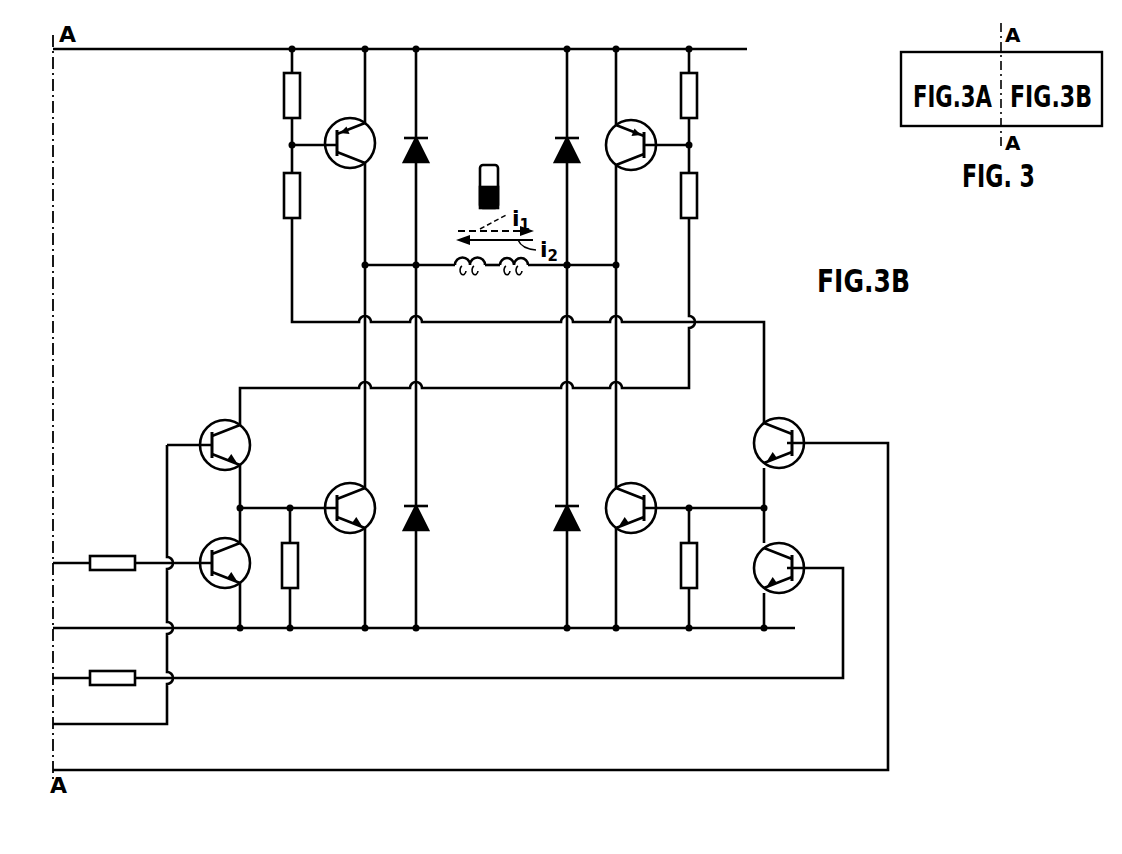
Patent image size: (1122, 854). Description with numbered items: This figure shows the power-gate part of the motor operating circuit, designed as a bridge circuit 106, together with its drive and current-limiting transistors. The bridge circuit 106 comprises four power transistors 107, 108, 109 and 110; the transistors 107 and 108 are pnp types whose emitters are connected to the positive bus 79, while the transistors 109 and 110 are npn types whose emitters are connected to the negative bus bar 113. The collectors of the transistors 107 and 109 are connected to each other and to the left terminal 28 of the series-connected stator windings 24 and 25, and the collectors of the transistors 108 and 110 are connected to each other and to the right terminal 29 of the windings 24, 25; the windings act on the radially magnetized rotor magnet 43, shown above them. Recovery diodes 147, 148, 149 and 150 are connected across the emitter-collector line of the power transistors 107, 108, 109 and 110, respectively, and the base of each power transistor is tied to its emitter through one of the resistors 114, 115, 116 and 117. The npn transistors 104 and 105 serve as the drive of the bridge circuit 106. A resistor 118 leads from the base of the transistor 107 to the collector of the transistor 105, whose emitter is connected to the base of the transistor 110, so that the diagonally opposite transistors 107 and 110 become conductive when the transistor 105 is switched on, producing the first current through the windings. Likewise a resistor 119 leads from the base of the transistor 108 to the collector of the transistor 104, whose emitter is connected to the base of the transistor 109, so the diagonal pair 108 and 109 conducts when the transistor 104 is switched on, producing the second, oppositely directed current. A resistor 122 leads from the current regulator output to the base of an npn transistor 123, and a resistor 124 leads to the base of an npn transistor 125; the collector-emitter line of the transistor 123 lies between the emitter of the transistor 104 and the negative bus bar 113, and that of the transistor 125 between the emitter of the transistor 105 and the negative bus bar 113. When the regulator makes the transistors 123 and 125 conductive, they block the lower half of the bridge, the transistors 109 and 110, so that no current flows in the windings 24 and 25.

The positive bus 79 is at (237, 49).
The bridge circuit 106 is at (468, 76).
The resistor 114 is at (284, 95).
The resistor 118 is at (284, 193).
The resistor 115 is at (697, 97).
The resistor 119 is at (697, 194).
The resistor 116 is at (298, 568).
The resistor 117 is at (682, 569).
The resistor 122 is at (113, 562).
The resistor 124 is at (120, 676).
The power transistor 107 is at (356, 118).
The power transistor 108 is at (638, 121).
The power transistor 109 is at (341, 487).
The power transistor 110 is at (632, 487).
The npn transistor 104 is at (251, 446).
The npn transistor 105 is at (784, 422).
The npn transistor 123 is at (226, 540).
The npn transistor 125 is at (786, 548).
The recovery diode 147 is at (424, 152).
The recovery diode 148 is at (556, 152).
The recovery diode 149 is at (424, 520).
The recovery diode 150 is at (556, 520).
The stator winding 24 is at (462, 281).
The stator winding 25 is at (515, 281).
The coil terminal 28 is at (418, 262).
The coil terminal 29 is at (569, 262).
The rotor magnet 43 is at (500, 191).
The negative bus bar 113 is at (474, 632).